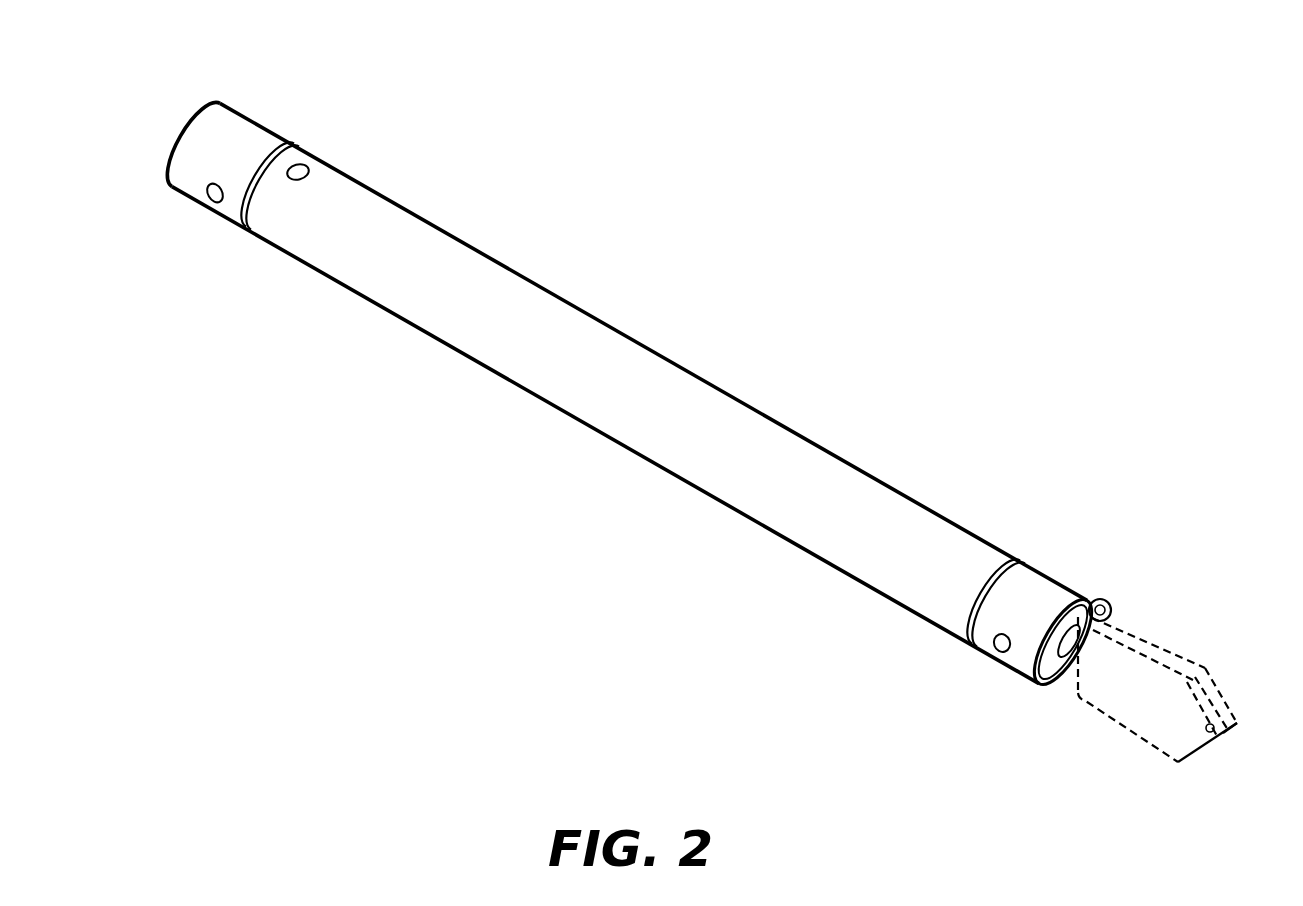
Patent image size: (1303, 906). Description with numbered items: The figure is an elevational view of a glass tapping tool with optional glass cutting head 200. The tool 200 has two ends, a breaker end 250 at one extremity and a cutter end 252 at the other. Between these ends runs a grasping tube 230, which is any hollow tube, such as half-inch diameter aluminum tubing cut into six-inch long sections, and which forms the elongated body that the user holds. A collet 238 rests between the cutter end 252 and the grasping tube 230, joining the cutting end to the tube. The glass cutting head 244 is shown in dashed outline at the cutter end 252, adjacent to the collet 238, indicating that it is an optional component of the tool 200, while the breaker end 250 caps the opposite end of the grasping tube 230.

The glass tapping tool with optional glass cutting head 200 is at (721, 407).
The grasping tube 230 is at (638, 350).
The collet 238 is at (1037, 585).
The blade head 244 is at (1152, 645).
The breaker end 250 is at (183, 118).
The cutter end 252 is at (1232, 722).